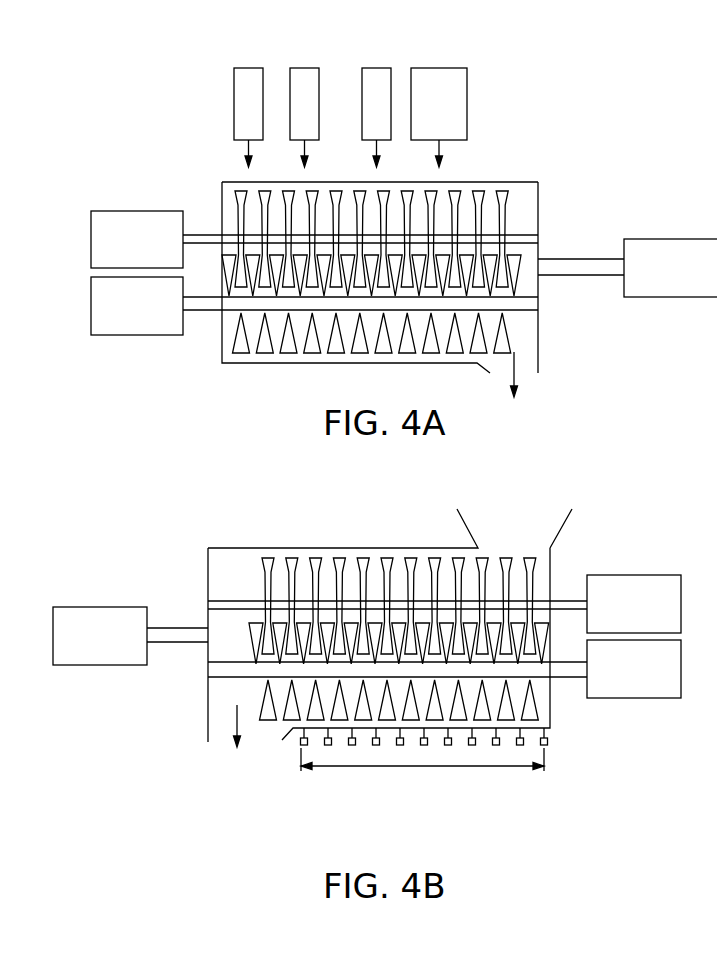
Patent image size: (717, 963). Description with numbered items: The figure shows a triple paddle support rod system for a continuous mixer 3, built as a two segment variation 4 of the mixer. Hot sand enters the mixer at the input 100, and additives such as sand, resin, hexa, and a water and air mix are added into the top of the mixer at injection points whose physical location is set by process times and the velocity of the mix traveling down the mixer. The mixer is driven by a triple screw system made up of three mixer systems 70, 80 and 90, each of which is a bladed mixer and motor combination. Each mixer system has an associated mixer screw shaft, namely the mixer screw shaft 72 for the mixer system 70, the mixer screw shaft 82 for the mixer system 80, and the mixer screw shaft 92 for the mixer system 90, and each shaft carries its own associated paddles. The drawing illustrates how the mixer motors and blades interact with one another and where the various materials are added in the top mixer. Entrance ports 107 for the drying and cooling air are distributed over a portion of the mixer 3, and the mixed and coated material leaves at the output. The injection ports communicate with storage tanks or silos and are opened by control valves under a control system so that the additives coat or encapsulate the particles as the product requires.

In FIG. 4A, the input 100 is at (222, 181).
In FIG. 4A, the mixer screw shaft 92 is at (203, 234).
In FIG. 4A, the mixer screw shaft 82 is at (204, 315).
In FIG. 4A, the mixer system 90 is at (91, 241).
In FIG. 4A, the mixer system 80 is at (91, 307).
In FIG. 4A, the mixer screw shaft 72 is at (575, 258).
In FIG. 4A, the mixer system 70 is at (665, 239).
In FIG. 4A, the two segment variation 4 is at (538, 185).
In FIG. 4B, the two segment variation 4 is at (208, 562).
In FIG. 4B, the mixer 3 is at (544, 756).
In FIG. 4B, the entrance ports for drying/cooling air 107 is at (426, 768).